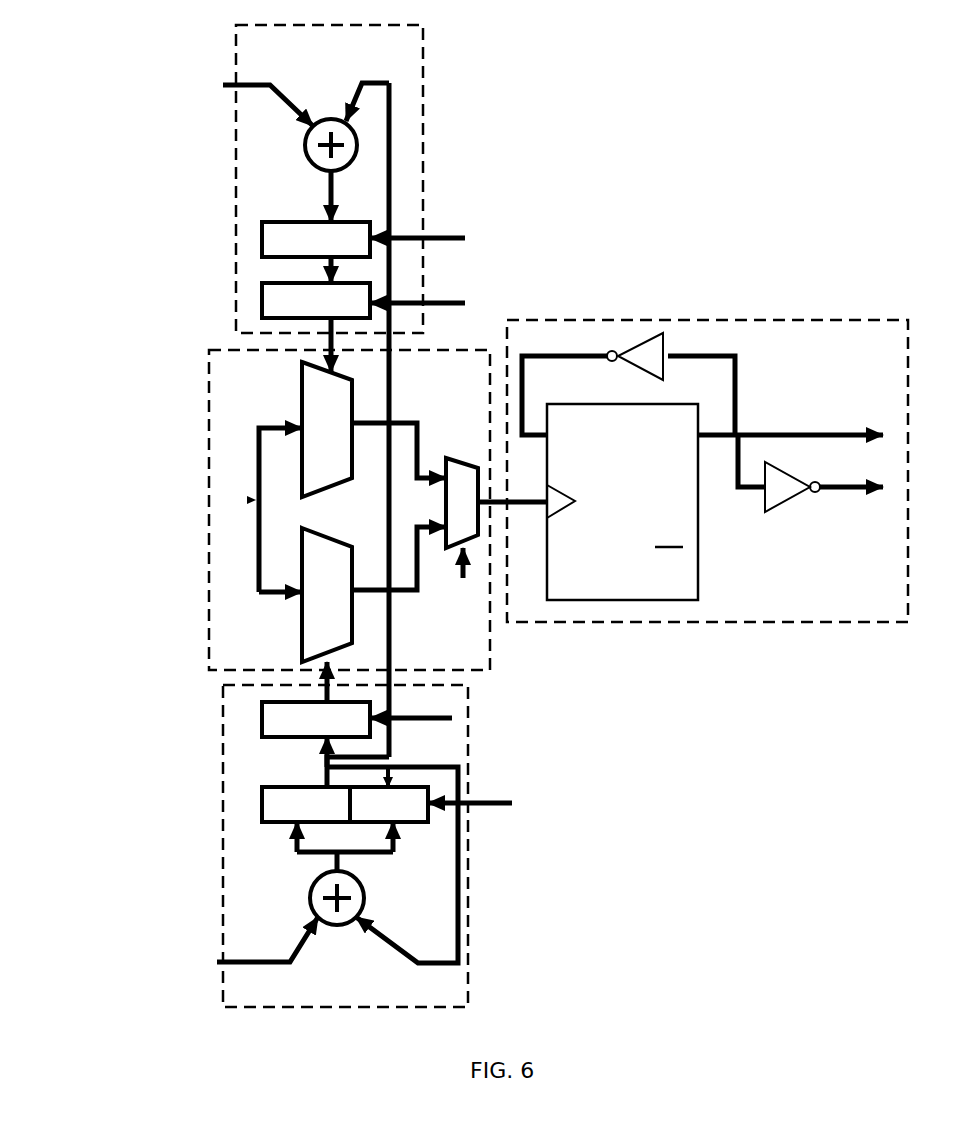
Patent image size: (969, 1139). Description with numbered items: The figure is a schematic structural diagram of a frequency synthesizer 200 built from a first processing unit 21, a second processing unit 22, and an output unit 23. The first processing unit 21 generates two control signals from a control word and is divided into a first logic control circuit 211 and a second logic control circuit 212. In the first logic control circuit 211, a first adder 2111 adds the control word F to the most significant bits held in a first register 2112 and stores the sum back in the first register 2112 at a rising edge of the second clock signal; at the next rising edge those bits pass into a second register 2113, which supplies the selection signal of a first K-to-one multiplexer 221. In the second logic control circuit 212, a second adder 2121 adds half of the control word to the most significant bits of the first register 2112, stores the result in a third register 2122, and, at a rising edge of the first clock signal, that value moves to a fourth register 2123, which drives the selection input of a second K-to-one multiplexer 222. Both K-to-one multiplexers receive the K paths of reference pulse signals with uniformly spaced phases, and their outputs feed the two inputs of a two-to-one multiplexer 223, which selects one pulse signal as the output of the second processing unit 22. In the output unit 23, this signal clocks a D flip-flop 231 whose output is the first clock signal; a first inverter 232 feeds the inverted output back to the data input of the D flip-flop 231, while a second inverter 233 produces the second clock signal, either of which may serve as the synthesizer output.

The clock generation circuit 200 is at (97, 92).
The first processing unit 21 is at (358, 145).
The second logic control circuit 212 is at (358, 198).
The second adder 2121 is at (423, 91).
The third register 2122 is at (362, 221).
The fourth register 2123 is at (258, 287).
The second processing unit 22 is at (257, 510).
The first K→1 multiplexer 221 is at (298, 622).
The second K→1 multiplexer 222 is at (355, 412).
The 2→1 multiplexer 223 is at (458, 466).
The output unit 23 is at (707, 456).
The D flip-flop 231 is at (700, 572).
The first inverter 232 is at (668, 334).
The second inverter 233 is at (792, 505).
The first logic control circuit 211 is at (366, 834).
The first adder 2111 is at (352, 896).
The first register 2112 is at (258, 800).
The second register 2113 is at (258, 713).